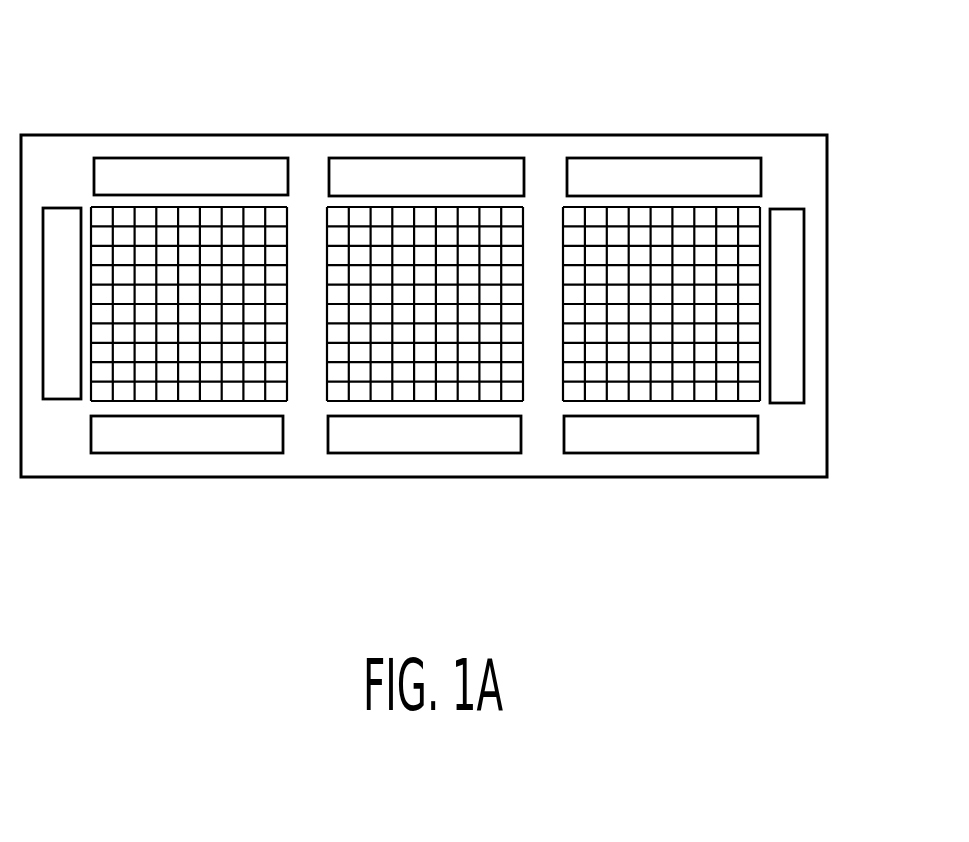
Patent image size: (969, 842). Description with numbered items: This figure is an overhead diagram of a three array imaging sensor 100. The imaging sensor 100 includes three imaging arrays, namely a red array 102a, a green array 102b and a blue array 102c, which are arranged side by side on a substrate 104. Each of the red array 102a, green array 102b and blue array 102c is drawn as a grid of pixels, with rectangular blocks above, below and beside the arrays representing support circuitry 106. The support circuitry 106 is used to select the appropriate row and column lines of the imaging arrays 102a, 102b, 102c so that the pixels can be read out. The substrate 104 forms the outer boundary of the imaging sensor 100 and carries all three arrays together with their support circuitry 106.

The imaging sensor 100 is at (432, 83).
The red array 102a is at (169, 405).
The green array 102b is at (403, 405).
The blue array 102c is at (684, 405).
The substrate 104 is at (830, 267).
The support circuitry 106 is at (790, 406).